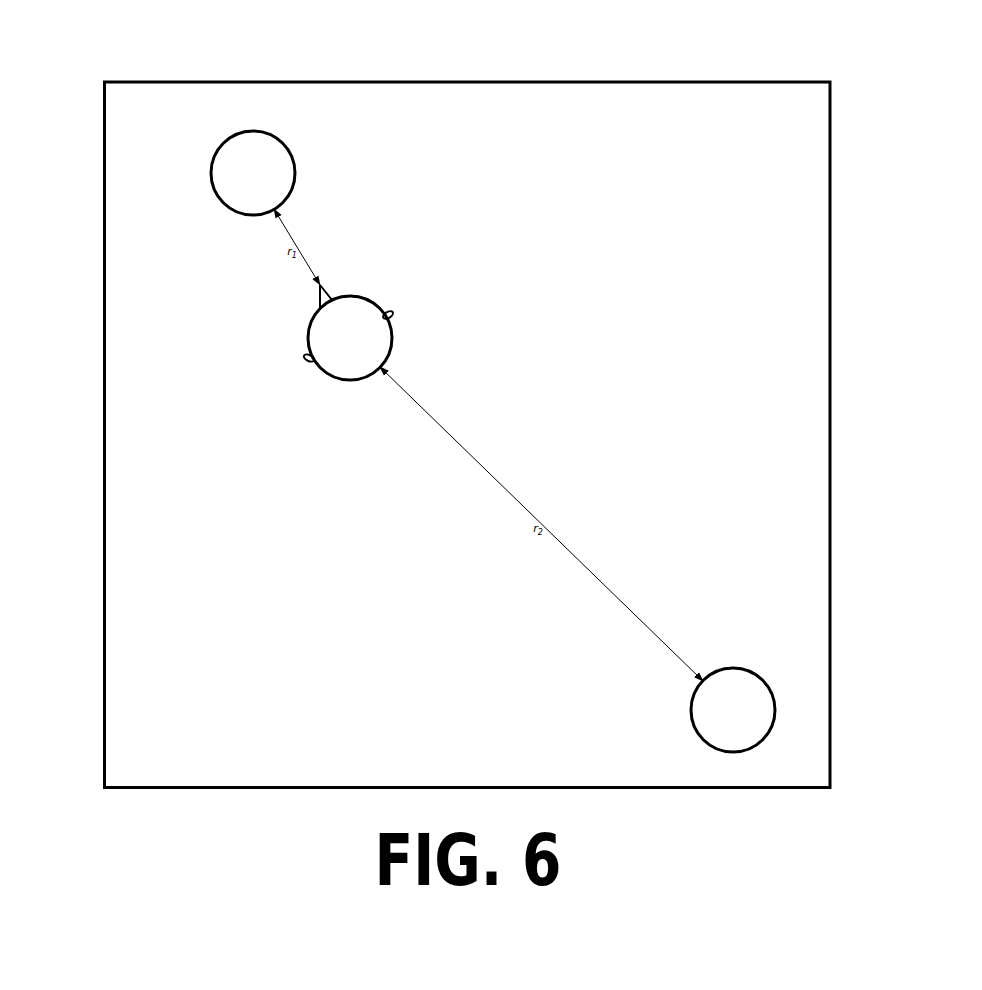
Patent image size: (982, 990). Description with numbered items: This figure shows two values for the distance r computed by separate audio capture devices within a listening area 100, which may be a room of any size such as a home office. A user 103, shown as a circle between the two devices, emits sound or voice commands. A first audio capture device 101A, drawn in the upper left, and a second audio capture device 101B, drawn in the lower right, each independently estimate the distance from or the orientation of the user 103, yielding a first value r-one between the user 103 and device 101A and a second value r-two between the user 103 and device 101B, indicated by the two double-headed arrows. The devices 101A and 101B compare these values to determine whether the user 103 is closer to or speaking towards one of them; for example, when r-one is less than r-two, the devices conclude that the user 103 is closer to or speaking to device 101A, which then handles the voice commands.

The listening area 100 is at (130, 82).
The audio capture device 101A is at (248, 152).
The audio capture device 101B is at (727, 678).
The user 103 is at (352, 353).